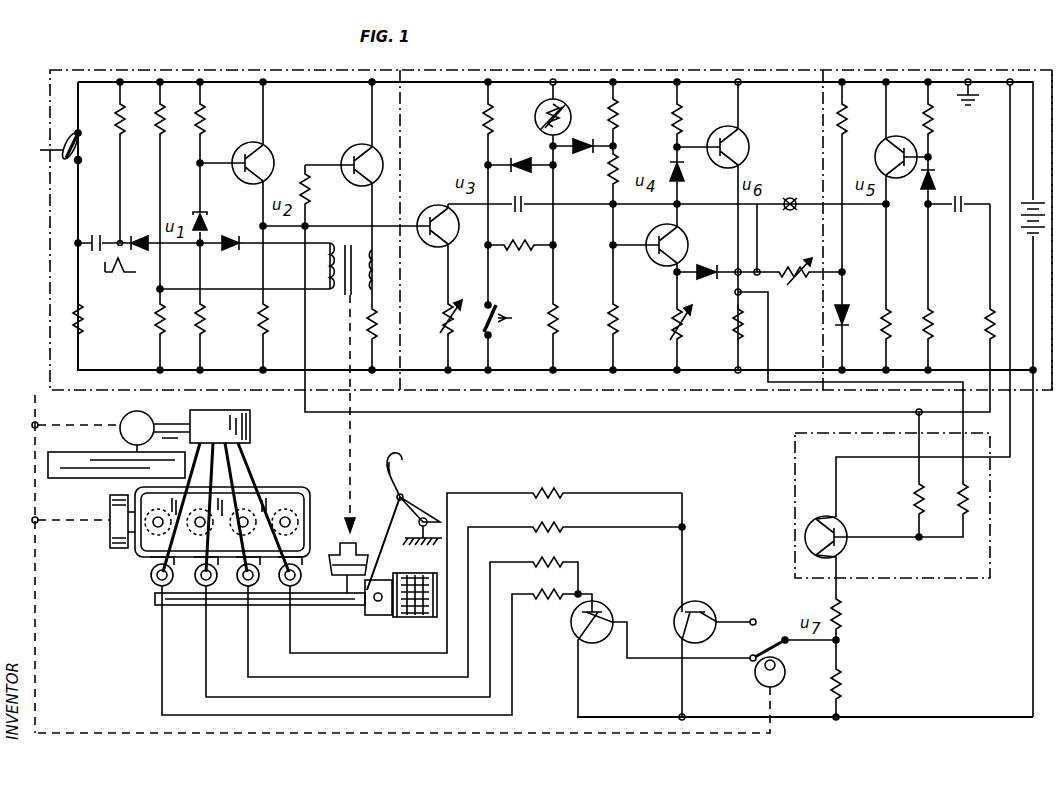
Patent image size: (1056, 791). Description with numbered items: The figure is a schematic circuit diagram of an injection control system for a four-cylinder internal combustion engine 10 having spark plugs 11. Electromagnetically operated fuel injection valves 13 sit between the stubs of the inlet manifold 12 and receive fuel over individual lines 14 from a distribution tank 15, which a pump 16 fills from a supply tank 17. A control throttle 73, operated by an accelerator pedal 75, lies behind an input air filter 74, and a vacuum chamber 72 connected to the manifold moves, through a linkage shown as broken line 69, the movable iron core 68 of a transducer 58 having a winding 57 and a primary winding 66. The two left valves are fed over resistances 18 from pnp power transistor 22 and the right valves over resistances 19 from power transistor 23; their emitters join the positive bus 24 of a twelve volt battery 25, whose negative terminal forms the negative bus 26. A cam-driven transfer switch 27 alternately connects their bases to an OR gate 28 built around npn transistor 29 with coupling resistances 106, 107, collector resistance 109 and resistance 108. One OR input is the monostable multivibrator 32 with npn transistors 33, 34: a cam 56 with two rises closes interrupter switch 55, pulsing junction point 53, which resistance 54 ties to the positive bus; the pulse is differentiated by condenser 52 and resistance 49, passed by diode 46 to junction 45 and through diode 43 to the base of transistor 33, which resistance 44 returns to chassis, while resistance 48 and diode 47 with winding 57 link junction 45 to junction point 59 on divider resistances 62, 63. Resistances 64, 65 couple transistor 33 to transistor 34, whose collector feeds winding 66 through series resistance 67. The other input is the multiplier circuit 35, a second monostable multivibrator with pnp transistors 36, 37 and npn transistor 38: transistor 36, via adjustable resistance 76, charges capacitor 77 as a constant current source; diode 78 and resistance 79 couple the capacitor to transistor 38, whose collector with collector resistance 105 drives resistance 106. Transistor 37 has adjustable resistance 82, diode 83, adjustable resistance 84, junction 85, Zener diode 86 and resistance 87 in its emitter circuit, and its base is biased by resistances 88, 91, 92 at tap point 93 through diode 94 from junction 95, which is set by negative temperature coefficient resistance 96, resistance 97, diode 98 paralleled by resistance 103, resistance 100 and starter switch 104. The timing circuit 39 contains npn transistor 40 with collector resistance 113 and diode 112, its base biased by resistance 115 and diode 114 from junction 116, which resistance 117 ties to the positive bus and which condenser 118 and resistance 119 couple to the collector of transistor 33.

The internal combustion engine 10 is at (308, 494).
The spark plugs 11 is at (200, 527).
The inlet manifold 12 is at (305, 606).
The fuel injection valves 13 is at (292, 586).
The line 14 is at (248, 456).
The distribution tank 15 is at (250, 424).
The pump 16 is at (122, 418).
The supply tank 17 is at (72, 478).
The resistances 18 is at (528, 568).
The resistance 19 is at (560, 502).
The pnp power transistor 22 is at (596, 600).
The pnp power transistor 23 is at (702, 600).
The positive bus 24 is at (570, 369).
The battery 25 is at (1015, 208).
The negative bus 26 is at (412, 85).
The transfer switch 27 is at (757, 636).
The OR gate 28 is at (795, 462).
The npn transistor 29 is at (815, 515).
The monostable multivibrator 32 is at (230, 68).
The npn transistor 33 is at (270, 150).
The npn transistor 34 is at (352, 145).
The multiplier circuit 35 is at (702, 74).
The pnp transistor 36 is at (430, 206).
The pnp transistor 37 is at (682, 240).
The npn transistor 38 is at (742, 140).
The timing circuit 39 is at (965, 72).
The npn transistor 40 is at (900, 136).
The diode 43 is at (208, 212).
The resistance 44 is at (208, 118).
The junction 45 is at (198, 247).
The diode 46 is at (145, 232).
The diode 47 is at (265, 254).
The resistance 48 is at (208, 320).
The resistance 49 is at (124, 128).
The condenser 52 is at (96, 232).
The junction point 53 is at (78, 243).
The resistance 54 is at (84, 320).
The interrupter switch 55 is at (91, 158).
The cam 56 is at (60, 135).
The winding 57 is at (322, 262).
The transducer 58 is at (348, 240).
The junction point 59 is at (157, 290).
The resistance 62 is at (171, 184).
The resistance 63 is at (156, 333).
The resistance 64 is at (268, 334).
The resistance 65 is at (303, 200).
The primary winding 66 is at (378, 265).
The series resistance 67 is at (378, 336).
The movable iron core 68 is at (337, 265).
The linkage 69 is at (356, 436).
The vacuum chamber 72 is at (352, 542).
The control throttle 73 is at (372, 610).
The input air filter 74 is at (410, 616).
The accelerator pedal 75 is at (402, 458).
The adjustable resistance 76 is at (440, 336).
The capacitor 77 is at (518, 212).
The diode 78 is at (684, 178).
The resistance 79 is at (684, 118).
The adjustable resistance 82 is at (687, 322).
The diode 83 is at (708, 280).
The adjustable resistance 84 is at (795, 282).
The junction 85 is at (844, 270).
The Zener diode 86 is at (848, 310).
The resistance 87 is at (848, 118).
The resistance 88 is at (620, 318).
The resistance 91 is at (622, 160).
The resistance 92 is at (625, 105).
The tap point 93 is at (620, 140).
The diode 94 is at (583, 157).
The junction 95 is at (560, 142).
The negative temperature coefficient resistance 96 is at (550, 100).
The resistance 97 is at (560, 315).
The diode 98 is at (520, 158).
The resistance 100 is at (482, 120).
The resistance 103 is at (518, 260).
The starter switch 104 is at (492, 338).
The collector resistance 105 is at (745, 330).
The coupling resistance 106 is at (955, 500).
The coupling resistance 107 is at (912, 495).
The resistance 108 is at (842, 602).
The collector resistance 109 is at (842, 680).
The diode 112 is at (784, 221).
The collector resistance 113 is at (866, 288).
The diode 114 is at (934, 178).
The resistance 115 is at (936, 125).
The junction 116 is at (912, 212).
The resistance 117 is at (934, 310).
The condenser 118 is at (952, 214).
The resistance 119 is at (967, 330).